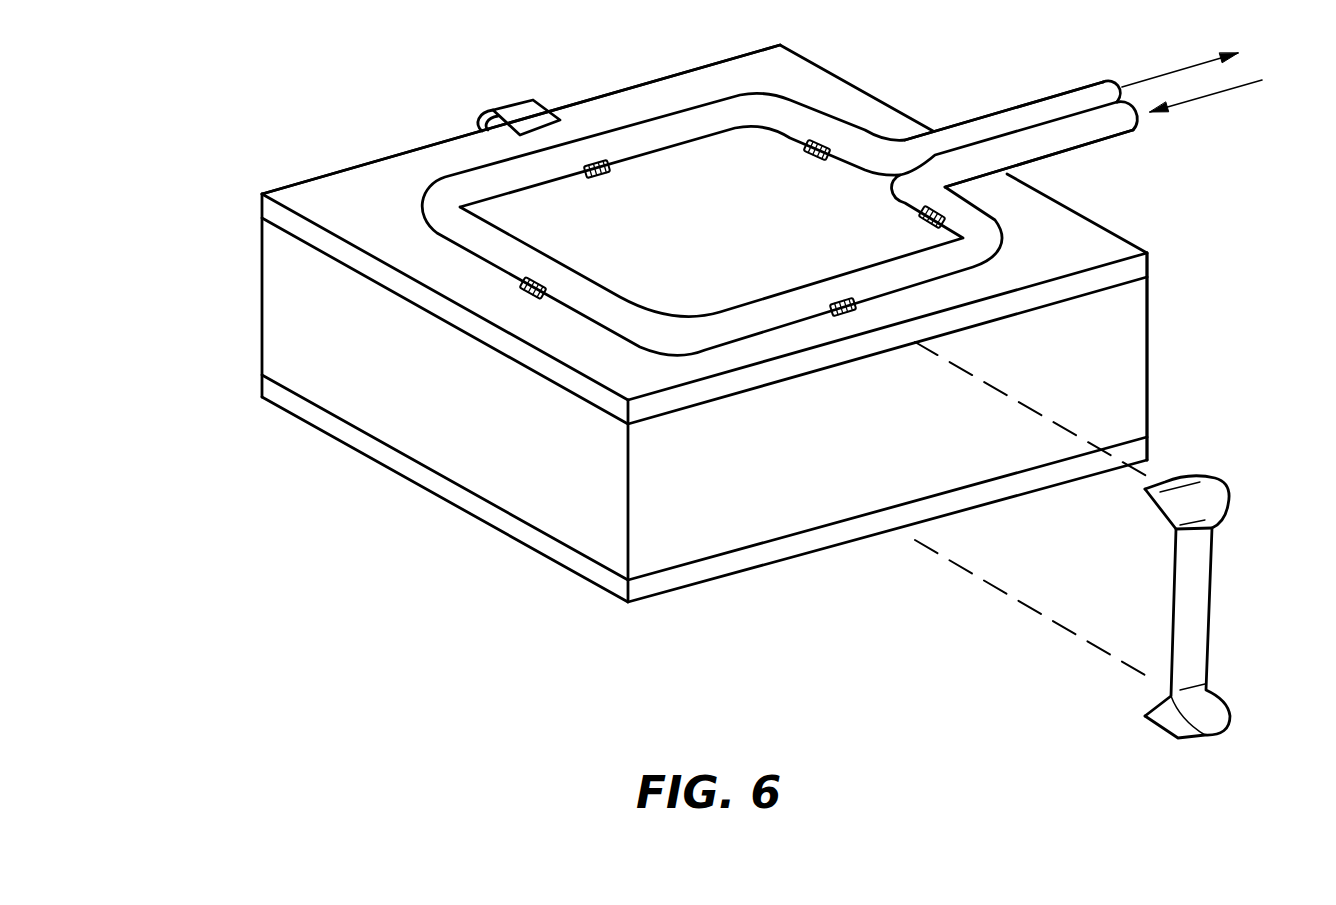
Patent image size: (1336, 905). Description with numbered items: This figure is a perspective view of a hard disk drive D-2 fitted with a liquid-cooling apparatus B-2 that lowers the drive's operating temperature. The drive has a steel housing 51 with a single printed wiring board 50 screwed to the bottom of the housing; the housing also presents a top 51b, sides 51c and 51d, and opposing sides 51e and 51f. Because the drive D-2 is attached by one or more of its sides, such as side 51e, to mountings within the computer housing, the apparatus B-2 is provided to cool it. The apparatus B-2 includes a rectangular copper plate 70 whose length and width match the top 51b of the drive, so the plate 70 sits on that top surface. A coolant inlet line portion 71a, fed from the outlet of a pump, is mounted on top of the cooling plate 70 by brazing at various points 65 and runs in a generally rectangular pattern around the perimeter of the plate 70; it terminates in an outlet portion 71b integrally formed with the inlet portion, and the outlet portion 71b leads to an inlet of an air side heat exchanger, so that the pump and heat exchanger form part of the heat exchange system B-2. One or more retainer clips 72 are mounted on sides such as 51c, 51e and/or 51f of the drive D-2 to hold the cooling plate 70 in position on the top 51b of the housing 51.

The printed wiring board 50 is at (747, 563).
The hard disk drive housing 51 is at (258, 249).
The top 51b is at (292, 236).
The side 51c is at (457, 401).
The side 51d is at (1150, 296).
The side 51e is at (877, 437).
The side 51f is at (372, 163).
The brazing points 65 is at (519, 284).
The copper plate 70 is at (1090, 223).
The coolant inlet line portion 71a is at (1083, 138).
The outlet portion 71b is at (1037, 107).
The retainer clips 72 is at (513, 110).
The hard disk drive D-2 is at (728, 488).
The apparatus B-2 is at (1186, 336).